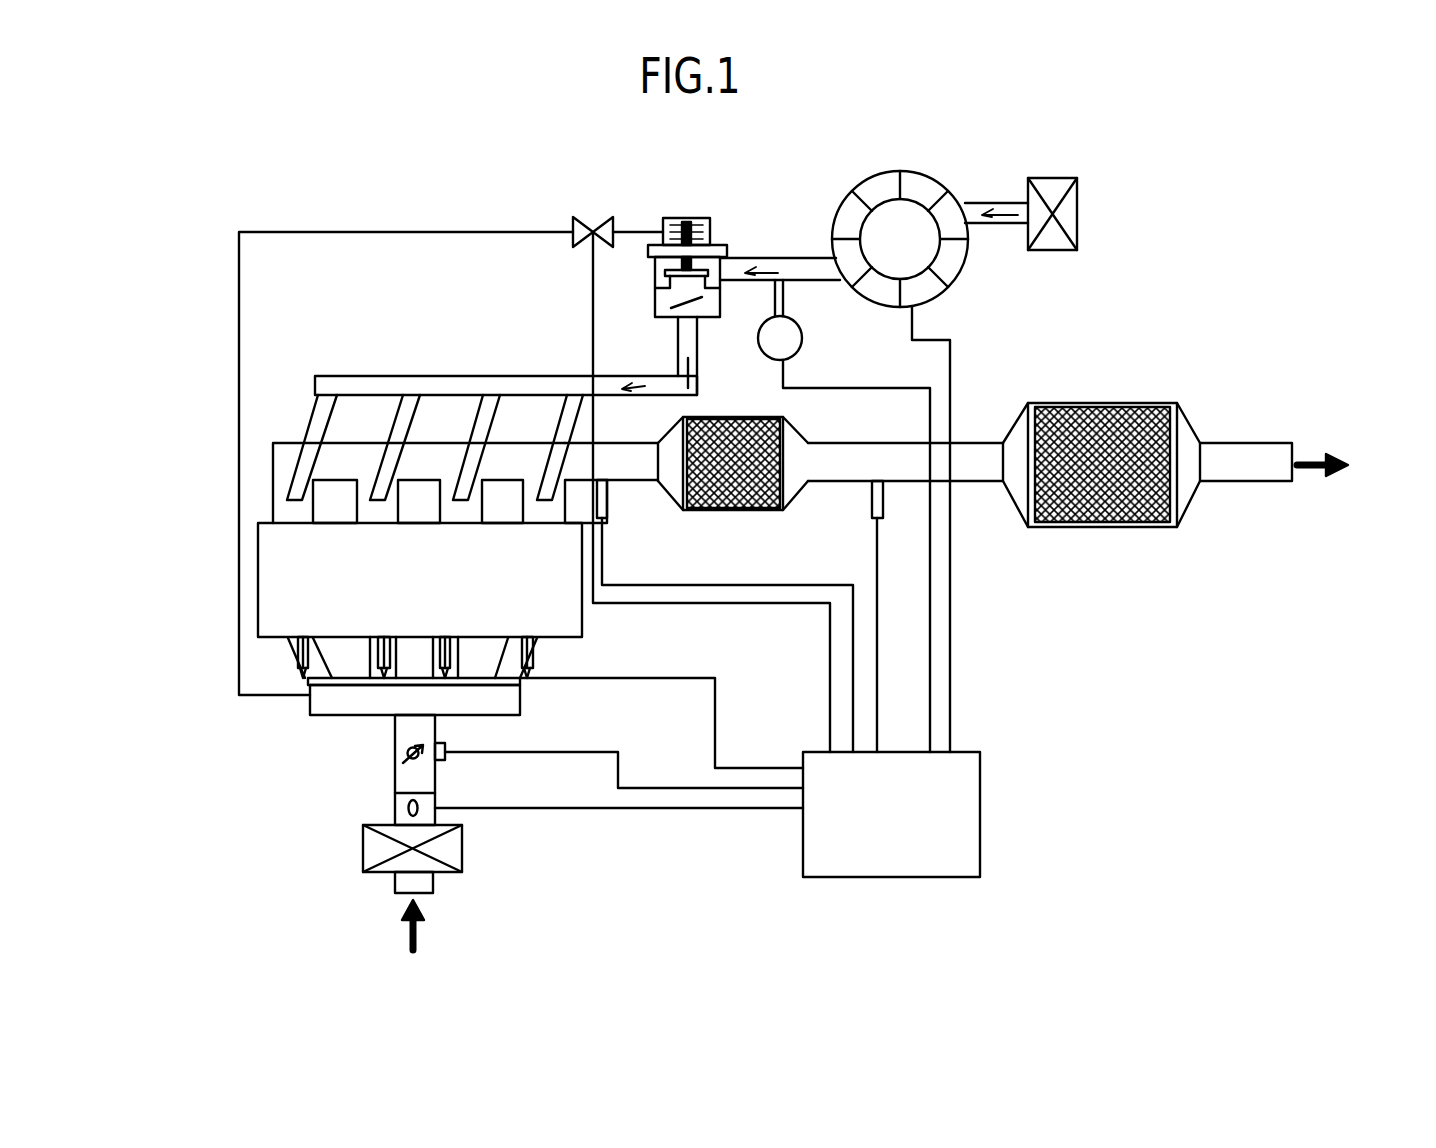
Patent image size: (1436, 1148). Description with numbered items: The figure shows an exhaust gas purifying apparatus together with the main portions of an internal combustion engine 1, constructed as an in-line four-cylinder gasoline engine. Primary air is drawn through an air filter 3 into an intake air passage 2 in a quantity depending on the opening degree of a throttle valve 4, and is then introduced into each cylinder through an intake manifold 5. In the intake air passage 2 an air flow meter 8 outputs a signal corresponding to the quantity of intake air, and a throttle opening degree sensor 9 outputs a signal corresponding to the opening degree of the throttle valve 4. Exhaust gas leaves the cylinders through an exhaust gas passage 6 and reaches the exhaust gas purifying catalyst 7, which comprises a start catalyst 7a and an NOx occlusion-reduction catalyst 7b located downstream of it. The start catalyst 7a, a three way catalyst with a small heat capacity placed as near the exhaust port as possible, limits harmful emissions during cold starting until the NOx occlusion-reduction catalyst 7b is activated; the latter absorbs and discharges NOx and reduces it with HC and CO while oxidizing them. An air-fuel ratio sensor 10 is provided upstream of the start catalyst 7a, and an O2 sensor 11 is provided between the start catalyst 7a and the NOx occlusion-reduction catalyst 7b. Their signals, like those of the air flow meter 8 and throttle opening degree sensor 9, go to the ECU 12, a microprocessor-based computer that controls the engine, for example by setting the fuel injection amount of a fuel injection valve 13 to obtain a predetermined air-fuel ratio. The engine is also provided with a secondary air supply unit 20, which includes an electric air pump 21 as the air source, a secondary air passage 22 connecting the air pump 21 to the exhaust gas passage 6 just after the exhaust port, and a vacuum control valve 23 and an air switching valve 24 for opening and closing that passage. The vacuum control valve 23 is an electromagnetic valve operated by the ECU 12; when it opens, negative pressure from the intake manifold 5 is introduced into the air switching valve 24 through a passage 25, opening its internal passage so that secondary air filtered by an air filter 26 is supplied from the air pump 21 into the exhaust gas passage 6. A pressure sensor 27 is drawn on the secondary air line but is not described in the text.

The internal combustion engine 1 is at (558, 613).
The intake air passage 2 is at (407, 883).
The air filter 3 is at (452, 848).
The throttle valve 4 is at (403, 768).
The intake manifold 5 is at (335, 716).
The exhaust gas passage 6 is at (630, 481).
The exhaust gas purifying catalyst 7 is at (1149, 630).
The start catalyst 7a is at (763, 507).
The NOx occlusion-reduction catalyst 7b is at (1117, 525).
The air flow meter 8 is at (437, 806).
The throttle opening degree sensor 9 is at (446, 751).
The air-fuel ratio sensor 10 is at (610, 517).
The O2 sensor 11 is at (887, 515).
The ECU 12 is at (800, 843).
The fuel injection valve 13 is at (377, 647).
The secondary air supply unit 20 is at (973, 313).
The electric air pump 21 is at (833, 220).
The secondary air passage 22 is at (472, 378).
The vacuum control valve 23 is at (585, 218).
The air switching valve 24 is at (690, 222).
The passage 25 is at (240, 327).
The air filter 26 is at (1036, 254).
The pressure sensor 27 is at (802, 352).